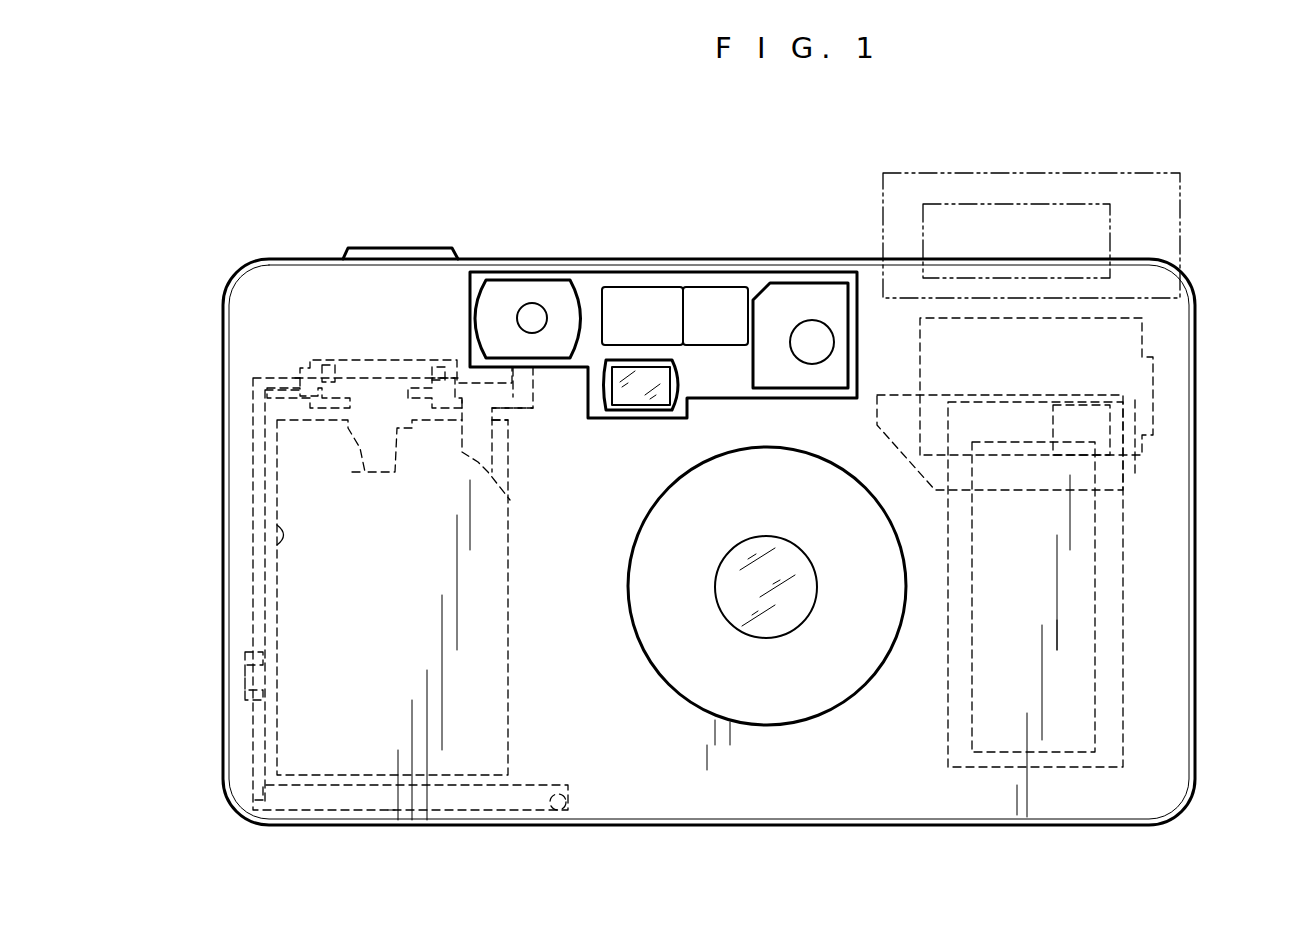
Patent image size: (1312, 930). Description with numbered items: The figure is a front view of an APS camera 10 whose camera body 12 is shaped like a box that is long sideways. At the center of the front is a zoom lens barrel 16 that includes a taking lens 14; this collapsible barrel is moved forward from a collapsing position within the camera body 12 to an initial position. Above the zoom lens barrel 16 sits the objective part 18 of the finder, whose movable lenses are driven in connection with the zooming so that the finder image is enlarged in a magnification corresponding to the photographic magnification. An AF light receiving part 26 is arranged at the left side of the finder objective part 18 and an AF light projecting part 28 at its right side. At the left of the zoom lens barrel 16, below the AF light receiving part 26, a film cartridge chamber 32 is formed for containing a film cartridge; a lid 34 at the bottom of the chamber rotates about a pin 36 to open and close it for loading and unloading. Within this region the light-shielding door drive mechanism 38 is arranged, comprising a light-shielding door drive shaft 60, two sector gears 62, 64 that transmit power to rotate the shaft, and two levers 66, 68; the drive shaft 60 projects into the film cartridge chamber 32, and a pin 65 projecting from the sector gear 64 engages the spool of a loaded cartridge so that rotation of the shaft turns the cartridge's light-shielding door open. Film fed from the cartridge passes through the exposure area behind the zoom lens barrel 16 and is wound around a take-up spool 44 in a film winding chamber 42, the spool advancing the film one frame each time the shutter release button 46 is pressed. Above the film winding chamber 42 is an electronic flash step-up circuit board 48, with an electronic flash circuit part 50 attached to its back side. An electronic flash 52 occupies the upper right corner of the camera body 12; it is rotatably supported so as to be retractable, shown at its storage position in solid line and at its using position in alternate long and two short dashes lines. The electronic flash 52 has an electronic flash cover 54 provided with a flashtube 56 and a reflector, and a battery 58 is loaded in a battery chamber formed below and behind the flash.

The camera 10 is at (312, 210).
The camera body 12 is at (688, 262).
The taking lens 14 is at (732, 593).
The zoom lens barrel 16 is at (788, 707).
The objective part 18 is at (640, 397).
The AF light receiving part 26 is at (560, 290).
The AF light projecting part 28 is at (822, 300).
The film cartridge chamber 32 is at (270, 545).
The lid 34 is at (310, 810).
The pin 36 is at (565, 815).
The light-shielding door drive mechanism 38 is at (463, 353).
The film winding chamber 42 is at (1127, 685).
The take-up spool 44 is at (1095, 565).
The shutter release button 46 is at (432, 253).
The electronic flash step-up circuit board 48 is at (1130, 480).
The electronic flash circuit part 50 is at (1130, 440).
The electronic flash 52 is at (918, 165).
The electronic flash cover 54 is at (1185, 196).
The flashtube 56 is at (1060, 205).
The battery 58 is at (1145, 333).
The light-shielding door drive shaft 60 is at (510, 500).
The sector gear 62 is at (508, 395).
The sector gear 64 is at (340, 372).
The pin 65 is at (362, 448).
The lever 66 is at (375, 365).
The lever 68 is at (250, 588).